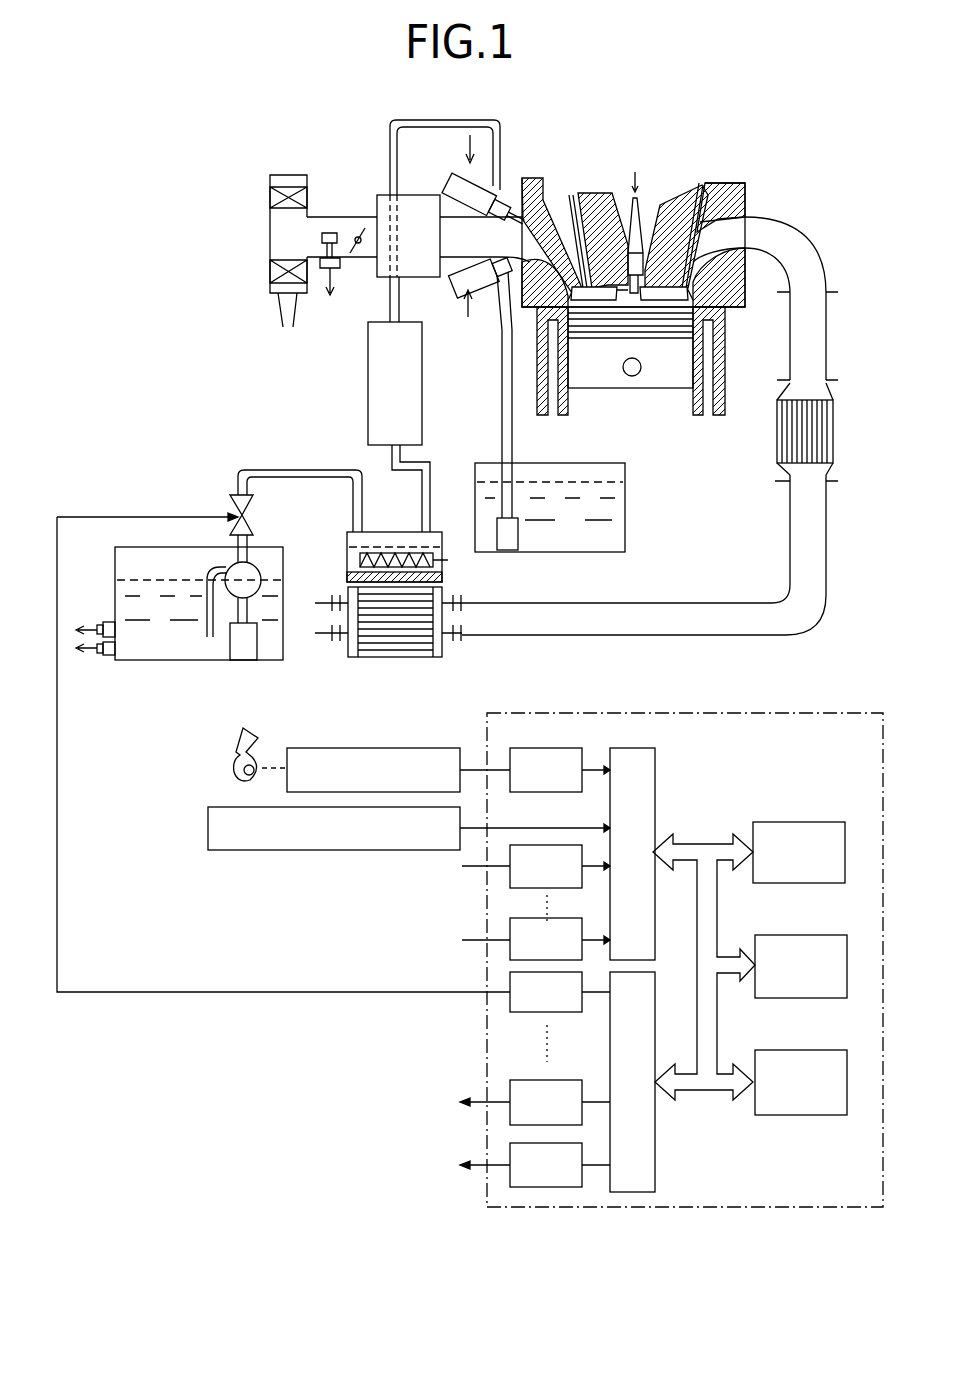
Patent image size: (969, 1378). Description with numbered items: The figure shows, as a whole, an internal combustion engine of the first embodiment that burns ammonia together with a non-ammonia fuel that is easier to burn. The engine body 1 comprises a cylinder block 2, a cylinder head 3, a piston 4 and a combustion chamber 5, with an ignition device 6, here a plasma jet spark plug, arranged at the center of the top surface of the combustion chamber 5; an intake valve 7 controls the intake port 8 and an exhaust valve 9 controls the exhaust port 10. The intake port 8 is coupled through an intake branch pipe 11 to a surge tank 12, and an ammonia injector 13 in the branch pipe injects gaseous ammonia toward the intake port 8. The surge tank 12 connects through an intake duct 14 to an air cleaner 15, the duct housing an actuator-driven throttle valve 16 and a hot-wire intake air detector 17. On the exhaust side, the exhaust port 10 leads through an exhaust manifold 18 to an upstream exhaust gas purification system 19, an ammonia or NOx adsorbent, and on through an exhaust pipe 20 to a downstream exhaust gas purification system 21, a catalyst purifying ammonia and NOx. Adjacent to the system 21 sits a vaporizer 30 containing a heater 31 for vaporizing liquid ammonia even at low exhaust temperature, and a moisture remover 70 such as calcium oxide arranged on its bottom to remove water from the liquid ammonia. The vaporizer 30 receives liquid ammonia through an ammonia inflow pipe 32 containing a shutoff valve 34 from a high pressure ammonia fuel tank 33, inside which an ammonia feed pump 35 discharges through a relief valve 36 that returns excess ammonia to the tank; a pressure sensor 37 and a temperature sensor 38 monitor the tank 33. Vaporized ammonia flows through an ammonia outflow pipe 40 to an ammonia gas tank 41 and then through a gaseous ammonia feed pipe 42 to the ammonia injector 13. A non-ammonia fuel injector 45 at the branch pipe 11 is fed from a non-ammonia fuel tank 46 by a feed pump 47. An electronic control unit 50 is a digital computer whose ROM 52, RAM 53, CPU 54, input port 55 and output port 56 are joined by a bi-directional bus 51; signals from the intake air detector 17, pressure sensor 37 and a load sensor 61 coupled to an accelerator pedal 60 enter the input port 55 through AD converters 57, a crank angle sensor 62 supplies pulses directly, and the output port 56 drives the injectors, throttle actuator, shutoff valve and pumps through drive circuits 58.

The internal combustion engine body 1 is at (752, 175).
The cylinder block 2 is at (725, 362).
The cylinder head 3 is at (748, 200).
The piston 4 is at (600, 388).
The combustion chamber 5 is at (662, 305).
The ignition device 6 is at (636, 238).
The intake valve 7 is at (578, 220).
The intake port 8 is at (545, 235).
The exhaust valve 9 is at (695, 185).
The exhaust port 10 is at (720, 228).
The intake branch pipe 11 is at (455, 290).
The surge tank 12 is at (425, 277).
The ammonia injector 13 is at (458, 178).
The intake duct 14 is at (345, 260).
The air cleaner 15 is at (270, 273).
The throttle valve 16 is at (357, 222).
The intake air detector 17 is at (330, 232).
The exhaust manifold 18 is at (802, 238).
The upstream exhaust gas purification system 19 is at (835, 432).
The exhaust pipe 20 is at (826, 555).
The downstream exhaust gas purification system 21 is at (407, 640).
The vaporizer 30 is at (347, 550).
The heater 31 is at (420, 556).
The ammonia inflow pipe 32 is at (335, 470).
The ammonia fuel tank 33 is at (168, 660).
The shutoff valve 34 is at (238, 510).
The ammonia feed pump 35 is at (245, 660).
The relief valve 36 is at (250, 565).
The pressure sensor 37 is at (103, 625).
The temperature sensor 38 is at (108, 660).
The ammonia outflow pipe 40 is at (430, 500).
The ammonia gas tank 41 is at (368, 378).
The gaseous ammonia feed pipe 42 is at (430, 122).
The non-ammonia fuel injector 45 is at (498, 300).
The non-ammonia fuel tank 46 is at (568, 545).
The feed pump 47 is at (510, 550).
The electronic control unit 50 is at (840, 710).
The bi-directional bus 51 is at (707, 845).
The ROM 52 is at (805, 822).
The RAM 53 is at (805, 935).
The CPU 54 is at (805, 1050).
The input port 55 is at (655, 760).
The output port 56 is at (655, 1175).
The AD converter 57 is at (540, 748).
The drive circuit 58 is at (510, 1003).
The accelerator pedal 60 is at (232, 762).
The load sensor 61 is at (325, 748).
The crank angle sensor 62 is at (225, 850).
The moisture remover 70 is at (442, 578).